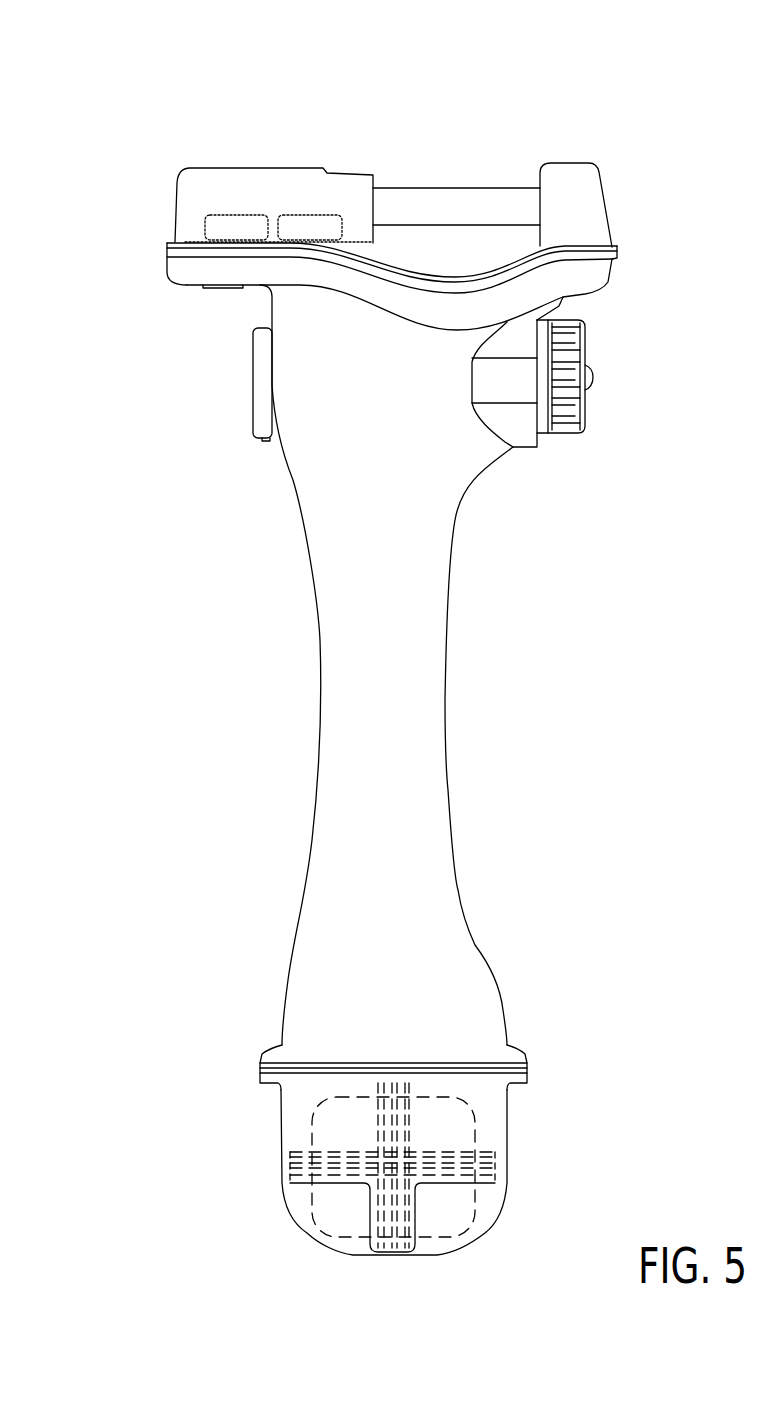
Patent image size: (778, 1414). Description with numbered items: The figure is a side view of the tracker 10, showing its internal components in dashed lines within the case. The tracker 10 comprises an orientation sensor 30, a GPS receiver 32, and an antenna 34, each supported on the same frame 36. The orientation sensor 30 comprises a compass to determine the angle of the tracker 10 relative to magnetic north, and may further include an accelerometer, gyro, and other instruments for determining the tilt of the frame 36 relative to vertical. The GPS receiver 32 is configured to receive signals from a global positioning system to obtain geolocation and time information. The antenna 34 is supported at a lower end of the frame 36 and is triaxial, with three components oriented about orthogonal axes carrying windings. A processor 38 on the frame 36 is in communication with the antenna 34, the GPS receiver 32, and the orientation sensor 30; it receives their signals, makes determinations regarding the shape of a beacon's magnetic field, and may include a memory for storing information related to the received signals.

The tracker 10 is at (380, 631).
The orientation sensor 30 is at (305, 220).
The GPS receiver 32 is at (262, 395).
The antenna 34 is at (456, 1135).
The frame 36 is at (447, 790).
The processor 38 is at (218, 220).